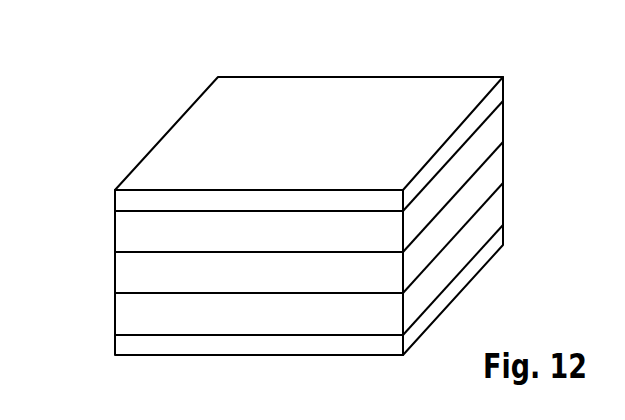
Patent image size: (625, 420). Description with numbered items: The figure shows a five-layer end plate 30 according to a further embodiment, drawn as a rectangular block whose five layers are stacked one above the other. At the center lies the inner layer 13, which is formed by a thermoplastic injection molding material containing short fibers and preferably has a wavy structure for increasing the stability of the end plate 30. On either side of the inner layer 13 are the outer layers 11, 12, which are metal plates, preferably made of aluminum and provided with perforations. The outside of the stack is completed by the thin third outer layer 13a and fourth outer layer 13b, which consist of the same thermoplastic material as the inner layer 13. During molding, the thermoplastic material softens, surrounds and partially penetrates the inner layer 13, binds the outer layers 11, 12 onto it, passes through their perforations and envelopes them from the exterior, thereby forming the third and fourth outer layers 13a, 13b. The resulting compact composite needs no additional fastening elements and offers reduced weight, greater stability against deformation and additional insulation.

The five-layer end plate 30 is at (127, 86).
The third outer layer 13a is at (120, 204).
The outer layer 11 is at (120, 237).
The inner layer 13 is at (120, 278).
The outer layer 12 is at (120, 317).
The fourth outer layer 13b is at (120, 348).